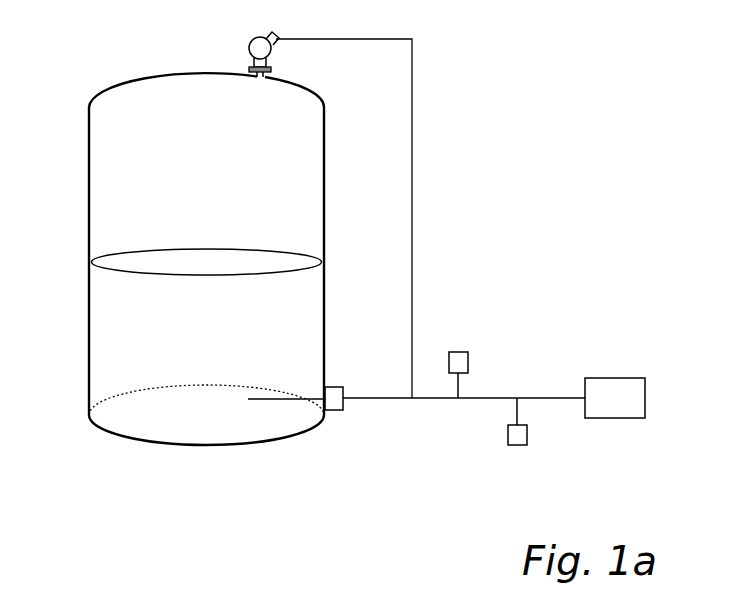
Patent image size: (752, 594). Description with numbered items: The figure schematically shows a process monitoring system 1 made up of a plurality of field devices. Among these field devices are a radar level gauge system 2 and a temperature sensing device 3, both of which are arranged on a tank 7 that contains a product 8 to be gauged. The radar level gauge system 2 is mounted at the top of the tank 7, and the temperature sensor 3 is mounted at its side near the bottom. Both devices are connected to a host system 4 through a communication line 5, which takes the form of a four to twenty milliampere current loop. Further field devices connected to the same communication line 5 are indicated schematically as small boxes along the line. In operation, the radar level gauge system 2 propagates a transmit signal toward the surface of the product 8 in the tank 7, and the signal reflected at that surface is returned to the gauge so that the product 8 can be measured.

The process monitoring system 1 is at (510, 138).
The radar level gauge system 2 is at (238, 47).
The temperature sensing device 3 is at (342, 365).
The host system 4 is at (610, 378).
The communication line 5 is at (437, 400).
The tank 7 is at (89, 200).
The product 8 is at (213, 372).